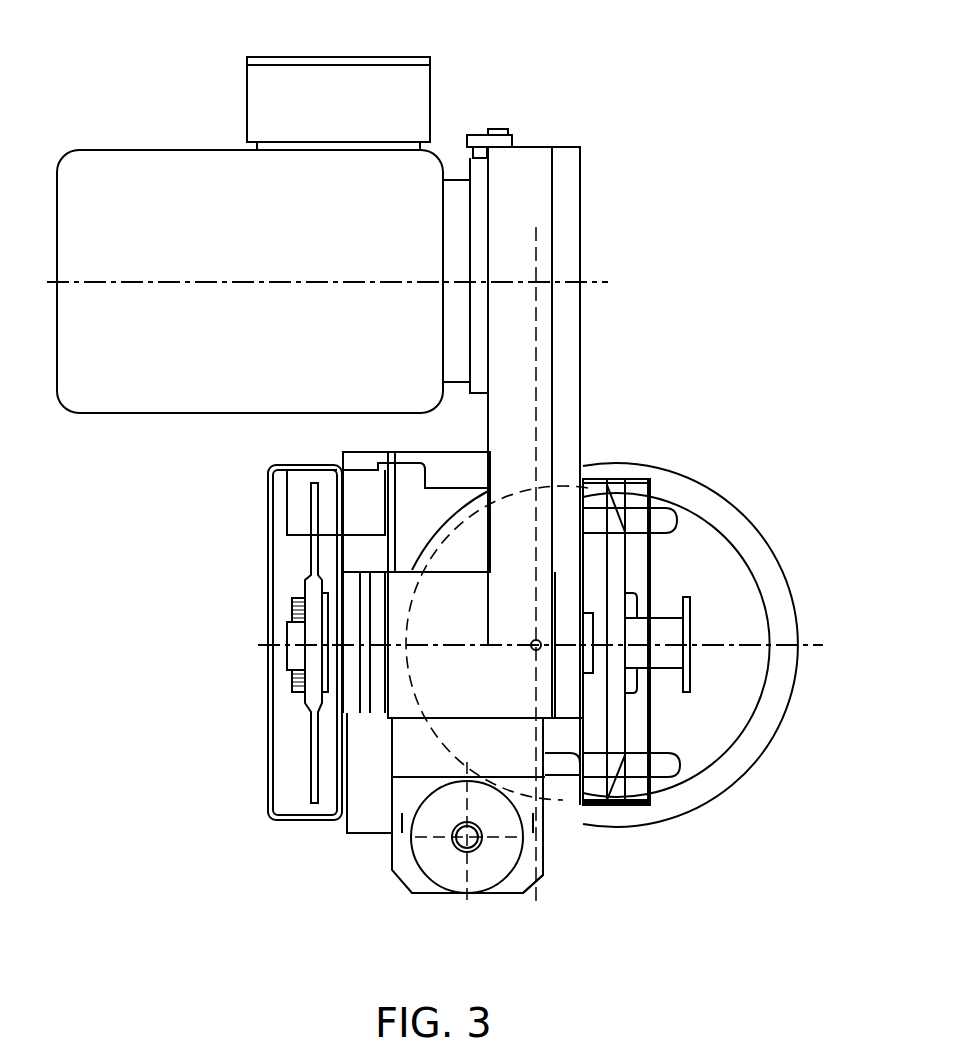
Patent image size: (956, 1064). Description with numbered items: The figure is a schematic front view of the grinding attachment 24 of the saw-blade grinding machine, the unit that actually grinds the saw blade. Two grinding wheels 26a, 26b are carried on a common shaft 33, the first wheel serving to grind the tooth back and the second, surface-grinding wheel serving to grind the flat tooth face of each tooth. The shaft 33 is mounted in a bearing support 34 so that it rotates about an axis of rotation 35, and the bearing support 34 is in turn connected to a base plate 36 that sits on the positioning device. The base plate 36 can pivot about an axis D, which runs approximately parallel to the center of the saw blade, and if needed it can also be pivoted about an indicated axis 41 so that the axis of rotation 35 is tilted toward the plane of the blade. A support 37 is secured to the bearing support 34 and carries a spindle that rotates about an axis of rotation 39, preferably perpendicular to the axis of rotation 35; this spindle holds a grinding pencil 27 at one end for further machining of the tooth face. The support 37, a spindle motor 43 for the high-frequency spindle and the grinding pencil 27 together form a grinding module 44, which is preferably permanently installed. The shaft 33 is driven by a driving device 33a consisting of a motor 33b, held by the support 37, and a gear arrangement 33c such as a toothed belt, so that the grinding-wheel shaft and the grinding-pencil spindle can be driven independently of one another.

The grinding attachment 24 is at (616, 252).
The grinding wheel 26a is at (312, 715).
The grinding wheel 26b is at (615, 746).
The grinding pencil 27 is at (478, 849).
The shaft 33 is at (328, 640).
The driving device 33a is at (208, 119).
The motor 33b is at (360, 226).
The gear arrangement 33c is at (548, 410).
The bearing support 34 is at (482, 684).
The axis of rotation 35 is at (805, 636).
The base plate 36 is at (705, 540).
The support 37 is at (548, 872).
The axis of rotation 39 is at (456, 851).
The indicated axis 41 is at (531, 643).
The spindle motor 43 is at (414, 862).
The grinding module 44 is at (348, 847).
The axis D is at (582, 632).